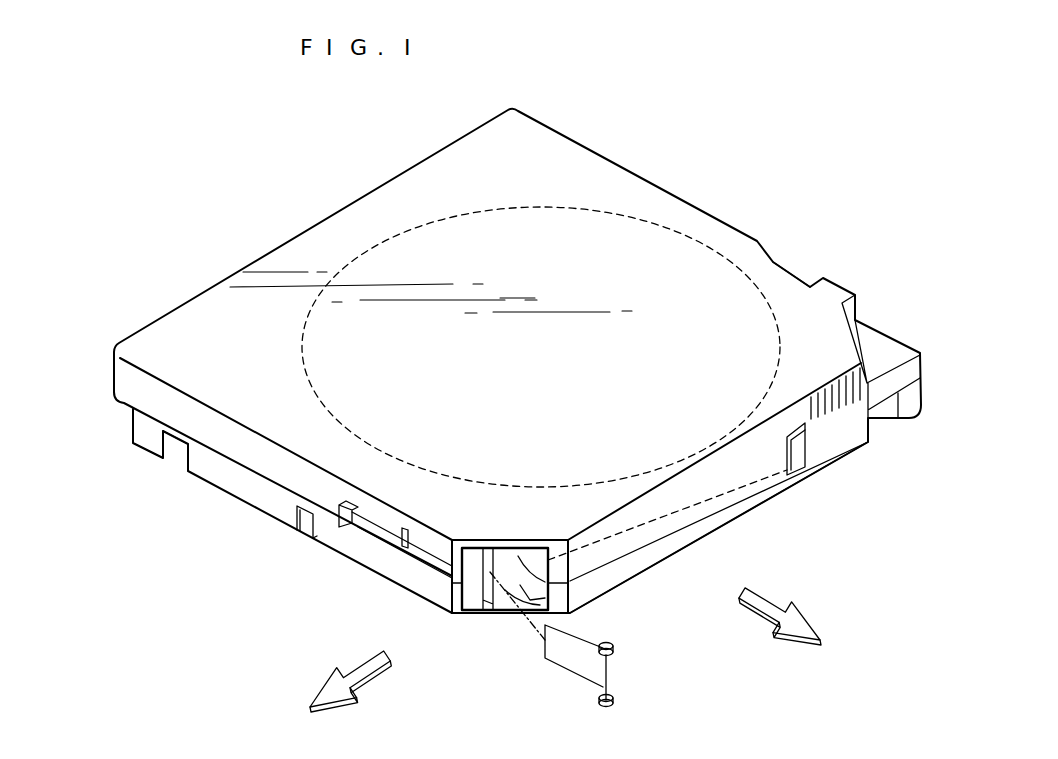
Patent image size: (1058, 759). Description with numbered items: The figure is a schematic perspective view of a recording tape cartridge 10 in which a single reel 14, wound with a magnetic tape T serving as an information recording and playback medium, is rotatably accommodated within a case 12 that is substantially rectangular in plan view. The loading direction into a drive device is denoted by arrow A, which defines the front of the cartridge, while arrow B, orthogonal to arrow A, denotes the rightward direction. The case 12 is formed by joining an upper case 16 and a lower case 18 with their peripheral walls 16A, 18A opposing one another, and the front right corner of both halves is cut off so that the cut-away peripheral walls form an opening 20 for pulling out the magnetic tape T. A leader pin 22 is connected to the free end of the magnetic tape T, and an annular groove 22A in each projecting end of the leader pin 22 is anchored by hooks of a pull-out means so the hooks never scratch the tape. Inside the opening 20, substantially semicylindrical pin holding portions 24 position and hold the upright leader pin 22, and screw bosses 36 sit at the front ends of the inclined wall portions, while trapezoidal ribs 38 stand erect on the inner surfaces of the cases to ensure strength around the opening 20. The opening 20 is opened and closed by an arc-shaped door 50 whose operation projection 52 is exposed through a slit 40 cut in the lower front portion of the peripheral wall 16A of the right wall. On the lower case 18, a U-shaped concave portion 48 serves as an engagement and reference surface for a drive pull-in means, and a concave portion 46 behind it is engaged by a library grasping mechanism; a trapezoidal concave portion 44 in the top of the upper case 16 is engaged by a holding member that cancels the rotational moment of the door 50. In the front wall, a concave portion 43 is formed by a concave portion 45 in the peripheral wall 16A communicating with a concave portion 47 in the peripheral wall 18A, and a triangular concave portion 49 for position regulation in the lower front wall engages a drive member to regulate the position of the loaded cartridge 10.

The recording tape cartridge 10 is at (781, 178).
The case 12 is at (561, 130).
The reel 14 is at (563, 288).
The upper case 16 is at (128, 381).
The peripheral wall 16A is at (753, 465).
The lower case 18 is at (148, 437).
The peripheral wall 18A is at (732, 510).
The opening 20 is at (496, 564).
The leader pin 22 is at (611, 643).
The annular groove 22A is at (613, 655).
The pin holding portion 24 is at (527, 570).
The screw boss 36 is at (455, 606).
The rib 38 is at (490, 596).
The slit 40 is at (378, 538).
The concave portion 43 is at (933, 493).
The concave portion 44 is at (796, 276).
The concave portion 45 is at (808, 430).
The concave portion 46 is at (177, 447).
The concave portion 47 is at (800, 440).
The concave portion 48 is at (300, 533).
The concave portion for position regulation 49 is at (887, 410).
The door 50 is at (350, 527).
The operation projection 52 is at (317, 523).
The magnetic tape T is at (580, 662).
The arrow A is at (787, 616).
The arrow B is at (339, 681).